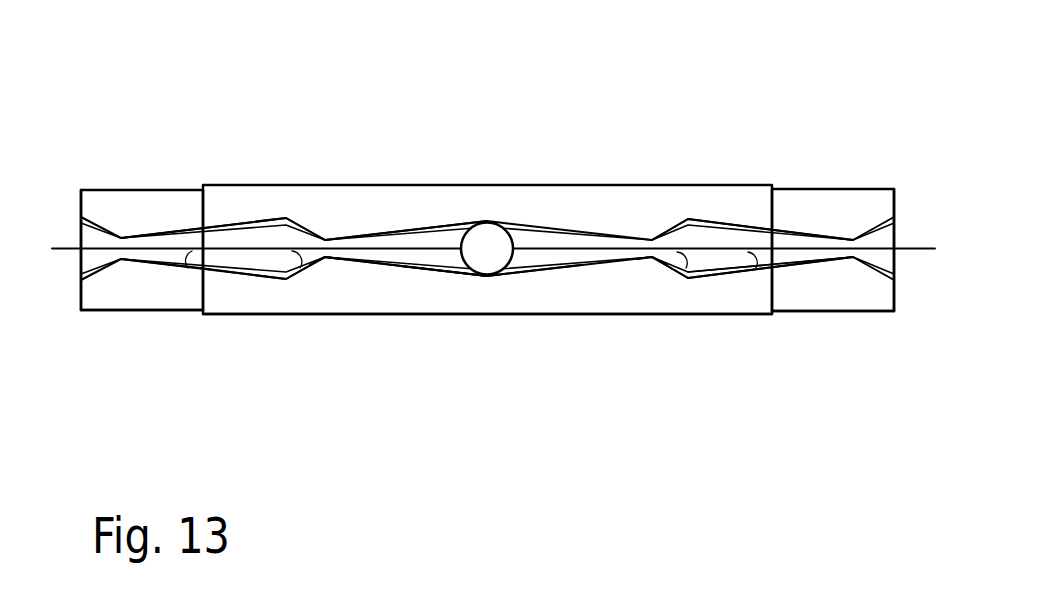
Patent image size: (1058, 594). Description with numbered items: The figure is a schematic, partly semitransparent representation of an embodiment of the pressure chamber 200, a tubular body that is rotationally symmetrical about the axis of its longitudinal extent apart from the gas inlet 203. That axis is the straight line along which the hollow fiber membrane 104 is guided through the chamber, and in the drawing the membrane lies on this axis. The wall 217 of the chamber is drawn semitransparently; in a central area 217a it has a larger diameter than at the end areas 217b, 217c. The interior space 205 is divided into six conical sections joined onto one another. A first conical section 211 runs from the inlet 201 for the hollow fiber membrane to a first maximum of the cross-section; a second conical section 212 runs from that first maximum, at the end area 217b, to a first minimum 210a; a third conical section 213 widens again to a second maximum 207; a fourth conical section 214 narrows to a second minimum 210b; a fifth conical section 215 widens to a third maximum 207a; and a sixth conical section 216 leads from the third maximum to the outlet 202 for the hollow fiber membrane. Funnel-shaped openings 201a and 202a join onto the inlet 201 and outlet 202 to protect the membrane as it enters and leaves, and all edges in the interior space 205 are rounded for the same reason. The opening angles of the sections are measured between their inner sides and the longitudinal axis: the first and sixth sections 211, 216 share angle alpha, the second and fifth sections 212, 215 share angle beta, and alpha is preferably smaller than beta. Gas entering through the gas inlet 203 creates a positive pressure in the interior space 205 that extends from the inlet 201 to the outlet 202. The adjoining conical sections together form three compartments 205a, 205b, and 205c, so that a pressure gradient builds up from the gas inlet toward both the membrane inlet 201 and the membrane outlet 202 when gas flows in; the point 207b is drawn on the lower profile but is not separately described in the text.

The pressure chamber 200 is at (287, 98).
The hollow fiber membrane 104 is at (926, 268).
The inlet for hollow fiber membranes 201 is at (130, 238).
The funnel-shaped opening 201a is at (80, 228).
The outlet for the hollow fiber membrane 202 is at (862, 235).
The funnel-shaped opening 202a is at (896, 278).
The gas inlet 203 is at (473, 243).
The interior space 205 is at (585, 235).
The compartment 205a is at (562, 268).
The compartment 205b is at (726, 244).
The compartment 205c is at (225, 238).
The second maximum of the cross-section 207 is at (487, 278).
The third maximum of the cross-section 207a is at (690, 212).
The left trough of lower flexure strip 207b is at (287, 278).
The first minimum of the cross-section 210a is at (323, 262).
The second minimum of the cross-section 210b is at (649, 262).
The first conical section 211 is at (221, 270).
The second conical section 212 is at (300, 208).
The third conical section 213 is at (430, 270).
The fourth conical section 214 is at (552, 222).
The fifth conical section 215 is at (684, 283).
The sixth conical section 216 is at (739, 272).
The wall 217 is at (370, 203).
The central area 217a is at (553, 313).
The end area 217b is at (866, 298).
The end area 217c is at (135, 293).